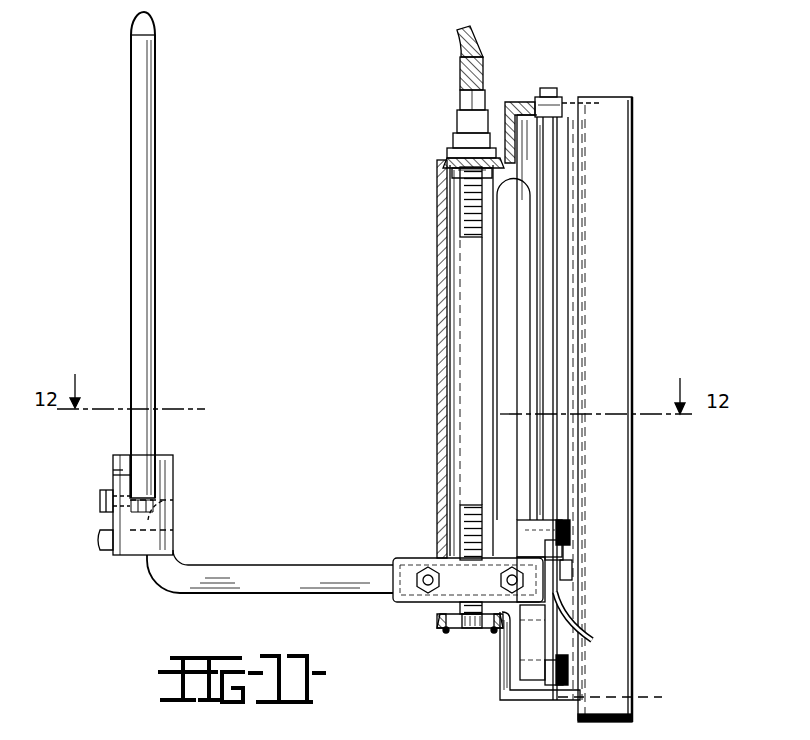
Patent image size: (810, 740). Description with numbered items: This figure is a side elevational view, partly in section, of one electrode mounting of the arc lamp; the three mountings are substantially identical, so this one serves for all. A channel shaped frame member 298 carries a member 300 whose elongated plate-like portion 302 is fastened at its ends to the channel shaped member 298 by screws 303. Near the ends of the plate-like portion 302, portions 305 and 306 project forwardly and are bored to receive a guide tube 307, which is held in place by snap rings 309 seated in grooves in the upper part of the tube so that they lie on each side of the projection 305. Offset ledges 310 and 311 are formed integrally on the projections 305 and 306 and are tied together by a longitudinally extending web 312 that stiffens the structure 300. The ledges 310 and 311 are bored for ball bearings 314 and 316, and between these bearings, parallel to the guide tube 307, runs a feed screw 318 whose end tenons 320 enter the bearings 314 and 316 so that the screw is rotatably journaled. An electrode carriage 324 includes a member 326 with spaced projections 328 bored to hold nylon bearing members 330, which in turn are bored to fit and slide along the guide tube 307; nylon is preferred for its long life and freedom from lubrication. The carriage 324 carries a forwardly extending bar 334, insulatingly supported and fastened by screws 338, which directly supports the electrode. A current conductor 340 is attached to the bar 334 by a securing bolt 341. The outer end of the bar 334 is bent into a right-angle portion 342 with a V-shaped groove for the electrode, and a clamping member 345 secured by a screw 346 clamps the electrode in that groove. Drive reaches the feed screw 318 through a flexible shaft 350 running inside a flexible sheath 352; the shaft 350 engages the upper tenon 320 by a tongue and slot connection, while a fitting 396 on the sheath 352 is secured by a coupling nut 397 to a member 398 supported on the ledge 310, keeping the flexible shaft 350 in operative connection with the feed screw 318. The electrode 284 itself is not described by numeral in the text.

The rod 284 is at (155, 253).
The channel shaped frame member 298 is at (632, 516).
The member 300 is at (567, 320).
The plate-like portion 302 is at (582, 158).
The screws 303 is at (592, 102).
The projecting portion 305 is at (533, 74).
The projecting portion 306 is at (505, 702).
The guide tube 307 is at (548, 90).
The snap rings 309 is at (548, 120).
The ledge 310 is at (453, 140).
The ledge 311 is at (498, 634).
The web 312 is at (440, 280).
The ball bearing 314 is at (455, 166).
The ball bearing 316 is at (440, 618).
The feed screw 318 is at (466, 344).
The tenons 320 is at (470, 176).
The electrode carriage 324 is at (517, 524).
The member 326 is at (518, 648).
The spaced projections 328 is at (570, 528).
The bearing members 330 is at (562, 538).
The bar 334 is at (292, 551).
The screws 338 is at (512, 568).
The current conductor 340 is at (566, 598).
The securing bolt 341 is at (572, 576).
The right-angle portion 342 is at (172, 486).
The clamping member 345 is at (113, 466).
The screw 346 is at (100, 498).
The flexible shaft 350 is at (462, 38).
The flexible sheath 352 is at (460, 70).
The fitting 396 is at (460, 100).
The coupling nut 397 is at (457, 122).
The member 398 is at (447, 152).